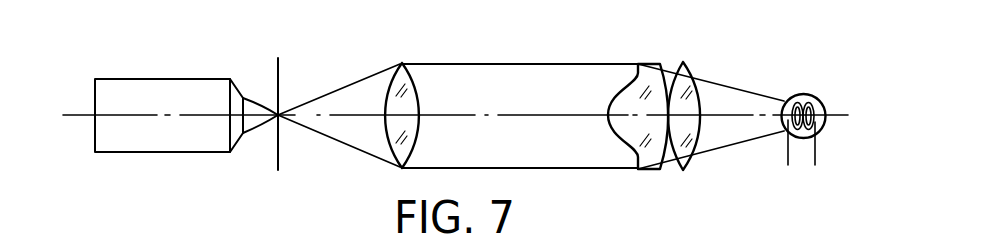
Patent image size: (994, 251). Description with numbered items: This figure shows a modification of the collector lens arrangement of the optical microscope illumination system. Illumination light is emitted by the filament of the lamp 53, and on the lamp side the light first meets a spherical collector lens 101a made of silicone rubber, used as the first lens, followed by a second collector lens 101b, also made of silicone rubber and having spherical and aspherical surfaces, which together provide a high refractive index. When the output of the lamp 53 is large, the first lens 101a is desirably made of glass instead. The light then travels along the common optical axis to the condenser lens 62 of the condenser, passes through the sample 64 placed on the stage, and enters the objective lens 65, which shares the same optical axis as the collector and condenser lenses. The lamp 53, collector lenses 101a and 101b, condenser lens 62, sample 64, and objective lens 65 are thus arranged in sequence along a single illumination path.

The objective lens 65 is at (195, 79).
The sample 64 is at (278, 74).
The condenser lens 62 is at (412, 80).
The second collector lens 101b is at (651, 63).
The spherical collector lens 101a is at (690, 72).
The lamp 53 is at (806, 93).